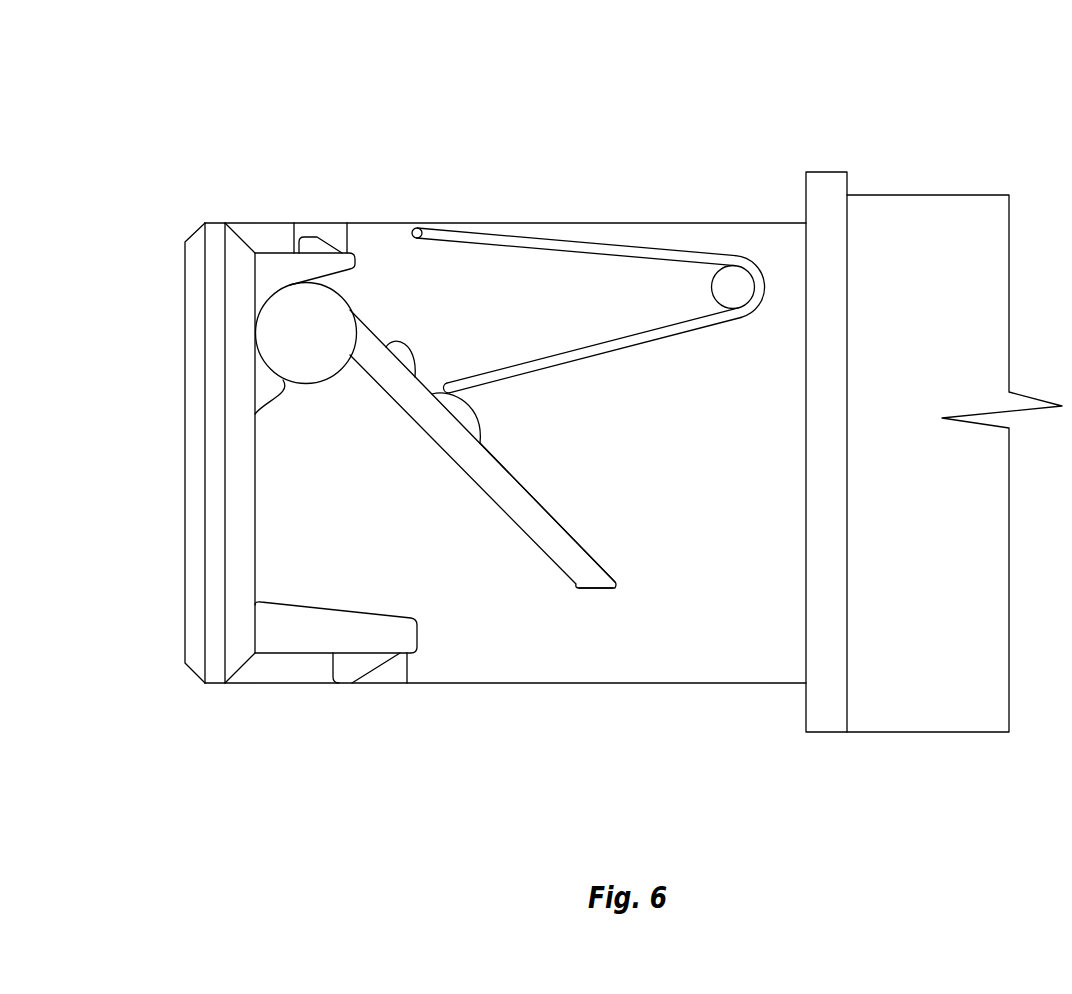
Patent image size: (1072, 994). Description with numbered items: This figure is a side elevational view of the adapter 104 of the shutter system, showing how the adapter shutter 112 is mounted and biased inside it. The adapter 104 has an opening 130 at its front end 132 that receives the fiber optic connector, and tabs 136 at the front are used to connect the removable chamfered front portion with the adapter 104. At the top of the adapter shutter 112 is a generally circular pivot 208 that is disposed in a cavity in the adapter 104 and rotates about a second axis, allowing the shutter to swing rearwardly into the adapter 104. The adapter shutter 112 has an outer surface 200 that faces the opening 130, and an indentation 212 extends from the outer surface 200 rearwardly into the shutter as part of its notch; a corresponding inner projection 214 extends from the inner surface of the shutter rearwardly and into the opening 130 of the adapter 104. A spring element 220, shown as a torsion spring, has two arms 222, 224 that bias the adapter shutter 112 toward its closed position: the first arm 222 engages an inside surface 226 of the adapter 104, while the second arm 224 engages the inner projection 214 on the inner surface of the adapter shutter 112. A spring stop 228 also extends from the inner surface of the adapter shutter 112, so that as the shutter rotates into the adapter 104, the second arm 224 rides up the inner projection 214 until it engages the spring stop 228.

The adapter 104 is at (731, 92).
The opening 130 is at (288, 568).
The front end 132 is at (185, 500).
The tabs 136 is at (318, 238).
The inside surface 226 is at (624, 223).
The generally circular pivot 208 is at (330, 313).
The outer surface 200 is at (553, 564).
The indentation 212 is at (583, 544).
The adapter shutter 112 is at (602, 590).
The spring stop 228 is at (417, 357).
The inner projection 214 is at (477, 403).
The spring element 220 is at (750, 318).
The first arm 222 is at (502, 242).
The second arm 224 is at (631, 345).